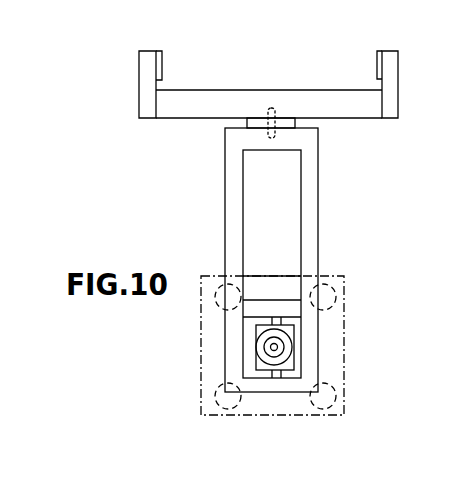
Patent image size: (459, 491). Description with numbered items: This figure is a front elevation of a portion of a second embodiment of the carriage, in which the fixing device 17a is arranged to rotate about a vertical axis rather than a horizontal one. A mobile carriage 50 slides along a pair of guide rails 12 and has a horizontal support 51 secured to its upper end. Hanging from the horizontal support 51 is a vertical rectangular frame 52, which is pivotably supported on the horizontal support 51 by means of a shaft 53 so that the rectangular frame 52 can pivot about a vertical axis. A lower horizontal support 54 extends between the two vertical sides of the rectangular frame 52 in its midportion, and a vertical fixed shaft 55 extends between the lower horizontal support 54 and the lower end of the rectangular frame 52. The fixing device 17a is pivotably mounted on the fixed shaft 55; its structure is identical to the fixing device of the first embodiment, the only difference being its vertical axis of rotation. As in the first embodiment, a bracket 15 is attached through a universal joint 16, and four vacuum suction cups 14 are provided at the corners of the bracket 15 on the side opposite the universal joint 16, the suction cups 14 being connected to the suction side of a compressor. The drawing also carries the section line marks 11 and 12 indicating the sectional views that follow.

The section line 11- 11 is at (162, 183).
The guide rails 12 is at (297, 72).
The vacuum suction cups 14 is at (303, 350).
The bracket 15 is at (345, 340).
The universal joint 16 is at (276, 350).
The fixing device 17a is at (256, 329).
The mobile carriage 50 is at (218, 166).
The horizontal support 51 is at (351, 111).
The vertical rectangular frame 52 is at (318, 244).
The shaft 53 is at (285, 101).
The lower horizontal support 54 is at (275, 306).
The vertical fixed shaft 55 is at (283, 322).